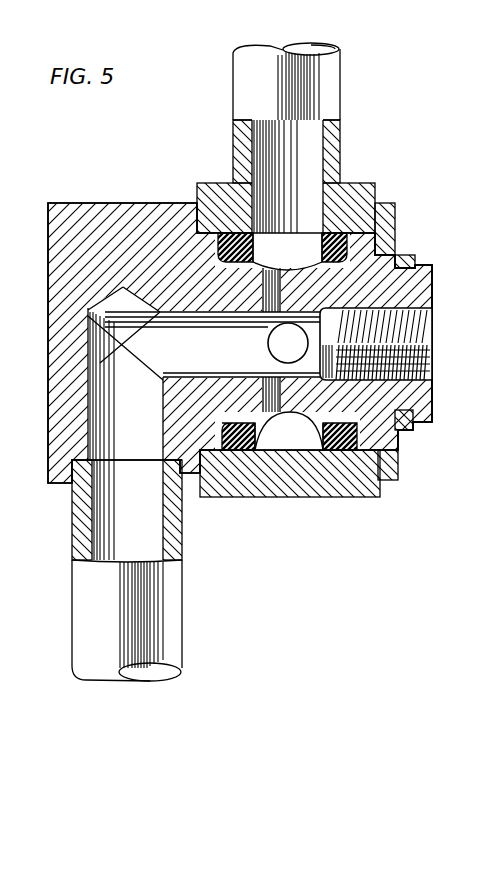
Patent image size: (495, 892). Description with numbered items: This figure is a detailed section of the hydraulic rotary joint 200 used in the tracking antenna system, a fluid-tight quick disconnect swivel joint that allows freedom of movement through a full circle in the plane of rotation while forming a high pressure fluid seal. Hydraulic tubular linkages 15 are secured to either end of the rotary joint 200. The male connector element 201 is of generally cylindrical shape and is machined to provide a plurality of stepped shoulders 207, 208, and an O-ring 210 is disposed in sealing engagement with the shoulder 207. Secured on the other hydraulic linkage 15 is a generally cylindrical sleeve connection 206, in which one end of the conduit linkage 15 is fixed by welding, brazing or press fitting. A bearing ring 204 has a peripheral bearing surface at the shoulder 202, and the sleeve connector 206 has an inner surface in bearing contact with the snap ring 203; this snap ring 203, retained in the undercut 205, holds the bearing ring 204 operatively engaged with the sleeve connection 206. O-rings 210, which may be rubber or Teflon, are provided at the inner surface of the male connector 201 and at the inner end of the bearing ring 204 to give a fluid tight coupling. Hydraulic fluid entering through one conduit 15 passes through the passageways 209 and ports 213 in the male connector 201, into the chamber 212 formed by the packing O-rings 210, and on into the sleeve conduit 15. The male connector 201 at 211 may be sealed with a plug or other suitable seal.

The hydraulic tubular linkage 15 is at (328, 76).
The hydraulic rotary joint 200 is at (292, 515).
The male connector element 201 is at (102, 199).
The shoulder 202 is at (412, 270).
The snap ring 203 is at (404, 256).
The bearing ring 204 is at (397, 207).
The undercut 205 is at (433, 278).
The sleeve connection 206 is at (376, 186).
The stepped shoulder 207 is at (218, 251).
The stepped shoulder 208 is at (196, 216).
The passageway 209 is at (207, 369).
The O-ring 210 is at (235, 262).
The sealed end of male connector 211 is at (420, 332).
The chamber 212 is at (289, 252).
The port 213 is at (287, 377).